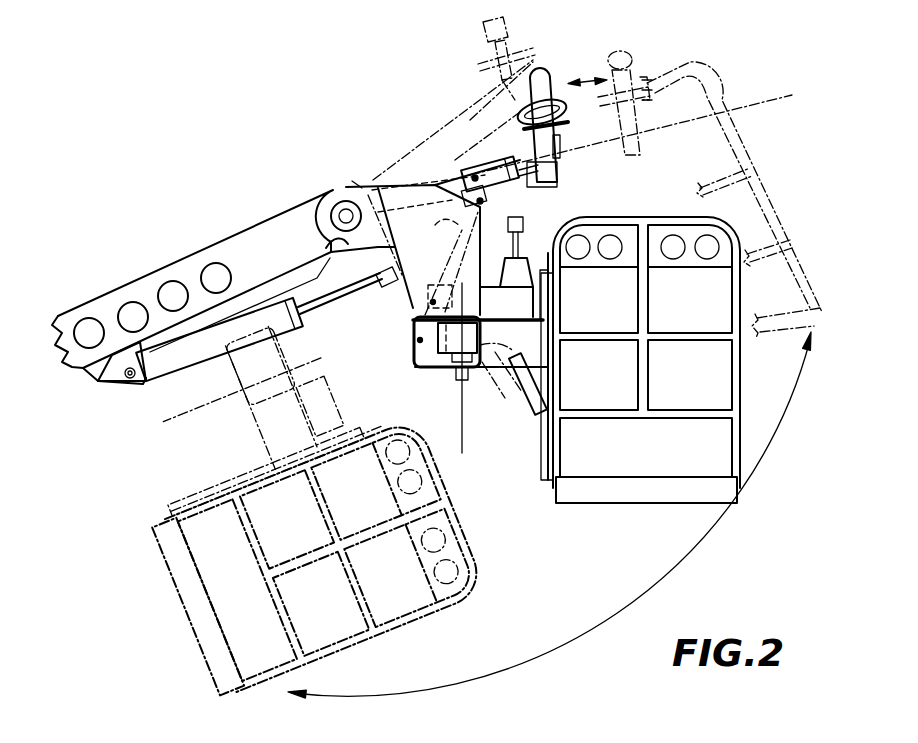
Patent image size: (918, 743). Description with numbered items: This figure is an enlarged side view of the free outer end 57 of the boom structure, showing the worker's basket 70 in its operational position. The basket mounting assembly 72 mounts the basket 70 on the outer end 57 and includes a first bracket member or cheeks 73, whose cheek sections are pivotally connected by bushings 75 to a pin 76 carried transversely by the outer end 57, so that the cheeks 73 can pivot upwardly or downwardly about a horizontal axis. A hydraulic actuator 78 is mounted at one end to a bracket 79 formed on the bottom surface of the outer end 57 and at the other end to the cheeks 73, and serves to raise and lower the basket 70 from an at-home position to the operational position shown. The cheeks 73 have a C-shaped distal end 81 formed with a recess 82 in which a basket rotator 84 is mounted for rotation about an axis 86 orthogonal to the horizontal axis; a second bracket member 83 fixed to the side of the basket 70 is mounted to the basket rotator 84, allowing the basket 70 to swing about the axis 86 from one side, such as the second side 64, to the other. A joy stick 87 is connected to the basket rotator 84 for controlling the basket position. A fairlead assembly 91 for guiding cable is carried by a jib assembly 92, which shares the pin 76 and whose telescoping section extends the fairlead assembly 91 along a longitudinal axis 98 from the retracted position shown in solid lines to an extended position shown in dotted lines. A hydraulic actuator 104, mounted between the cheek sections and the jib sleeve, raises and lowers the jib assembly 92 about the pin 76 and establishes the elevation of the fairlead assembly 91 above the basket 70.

The free outer end 57 is at (247, 227).
The second side 64 is at (271, 230).
The basket 70 is at (736, 447).
The basket mounting assembly 72 is at (403, 167).
The cheeks 73 is at (352, 181).
The bushings 75 is at (333, 192).
The pin 76 is at (327, 248).
The hydraulic actuator 78 is at (186, 366).
The bracket 79 is at (112, 373).
The distal end 81 is at (412, 372).
The recess 82 is at (415, 335).
The second bracket member 83 is at (525, 392).
The basket rotator 84 is at (413, 316).
The axis 86 is at (463, 435).
The joy stick 87 is at (514, 217).
The fairlead assembly 91 is at (558, 70).
The jib assembly 92 is at (567, 176).
The longitudinal axis 98 is at (765, 95).
The hydraulic actuator 104 is at (385, 240).